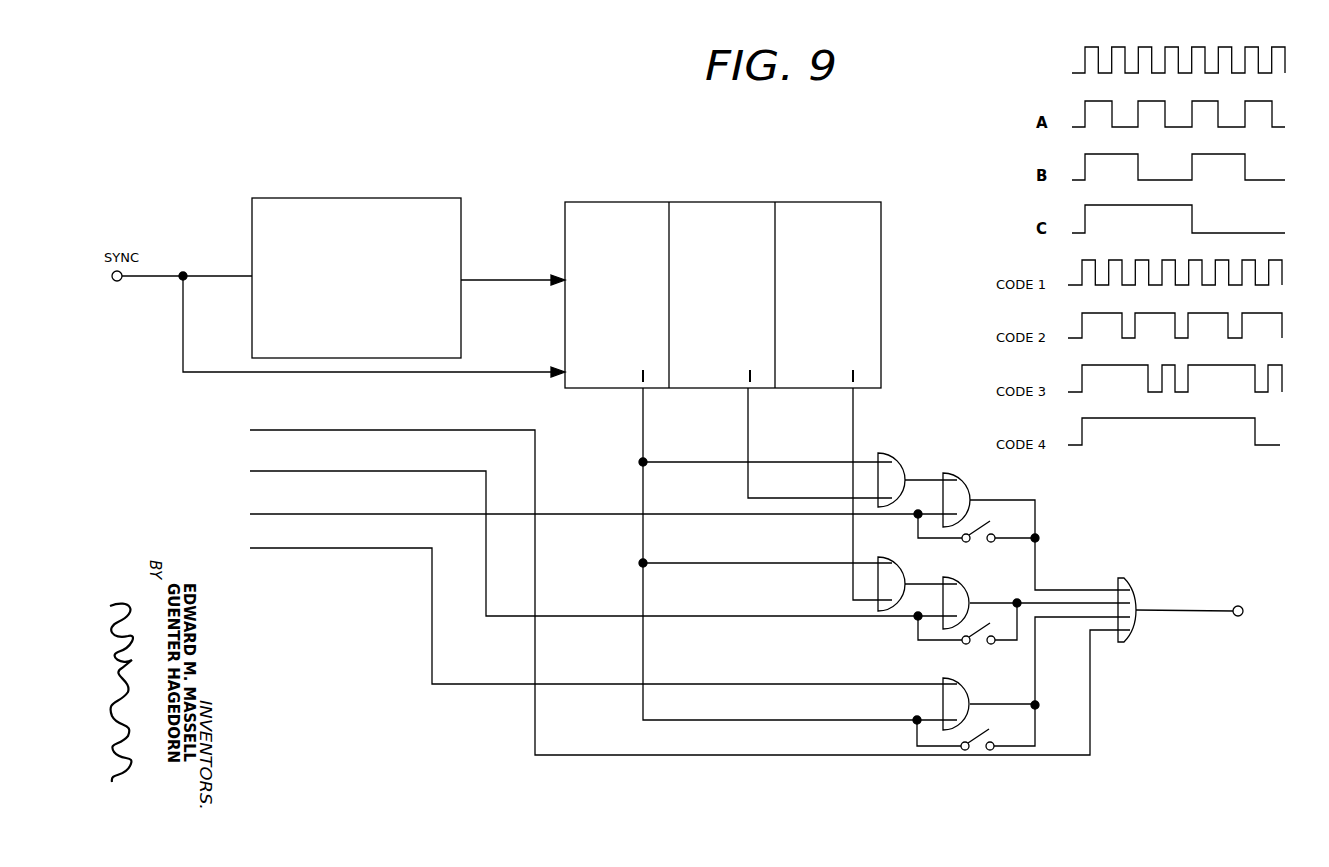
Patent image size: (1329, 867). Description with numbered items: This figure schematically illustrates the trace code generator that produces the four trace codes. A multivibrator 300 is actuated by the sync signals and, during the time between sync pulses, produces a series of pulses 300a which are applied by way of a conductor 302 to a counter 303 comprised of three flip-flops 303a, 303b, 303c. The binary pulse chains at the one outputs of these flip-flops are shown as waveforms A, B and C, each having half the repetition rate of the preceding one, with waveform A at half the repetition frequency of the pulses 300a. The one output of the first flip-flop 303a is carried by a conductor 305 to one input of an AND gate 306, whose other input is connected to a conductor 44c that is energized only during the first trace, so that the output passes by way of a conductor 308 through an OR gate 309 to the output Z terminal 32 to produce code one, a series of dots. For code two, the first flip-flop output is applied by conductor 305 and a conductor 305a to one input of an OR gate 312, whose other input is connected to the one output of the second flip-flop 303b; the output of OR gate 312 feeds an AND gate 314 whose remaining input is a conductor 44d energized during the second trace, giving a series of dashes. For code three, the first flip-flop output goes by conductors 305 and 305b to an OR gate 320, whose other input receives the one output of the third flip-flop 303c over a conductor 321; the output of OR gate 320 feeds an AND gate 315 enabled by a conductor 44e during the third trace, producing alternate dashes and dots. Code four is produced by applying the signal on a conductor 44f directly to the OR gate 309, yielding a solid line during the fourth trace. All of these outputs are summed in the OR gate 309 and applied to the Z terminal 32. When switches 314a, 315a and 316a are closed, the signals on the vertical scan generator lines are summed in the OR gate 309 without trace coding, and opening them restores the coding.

The multivibrator 300 is at (363, 198).
The pulses 300a is at (1150, 64).
The conductor 302 is at (485, 278).
The counter 303 is at (750, 279).
The flip-flop 303a is at (612, 202).
The second flip-flop 303b is at (718, 202).
The flip-flop 303c is at (828, 202).
The conductor 305 is at (642, 410).
The conductor 305a is at (703, 462).
The conductor 305b is at (693, 563).
The conductor 321 is at (852, 410).
The OR gate 312 is at (890, 455).
The AND gate 314 is at (962, 480).
The switch 314a is at (990, 532).
The OR gate 320 is at (897, 557).
The AND gate 315 is at (964, 581).
The switch 315a is at (989, 636).
The AND gate 306 is at (963, 690).
The conductor 308 is at (1037, 690).
The switch 316a is at (988, 741).
The OR gate 309 is at (1134, 627).
The Z terminal 32 is at (1242, 616).
The conductor 44c is at (283, 549).
The conductor 44d is at (283, 515).
The conductor 44e is at (283, 472).
The conductor 44f is at (281, 431).